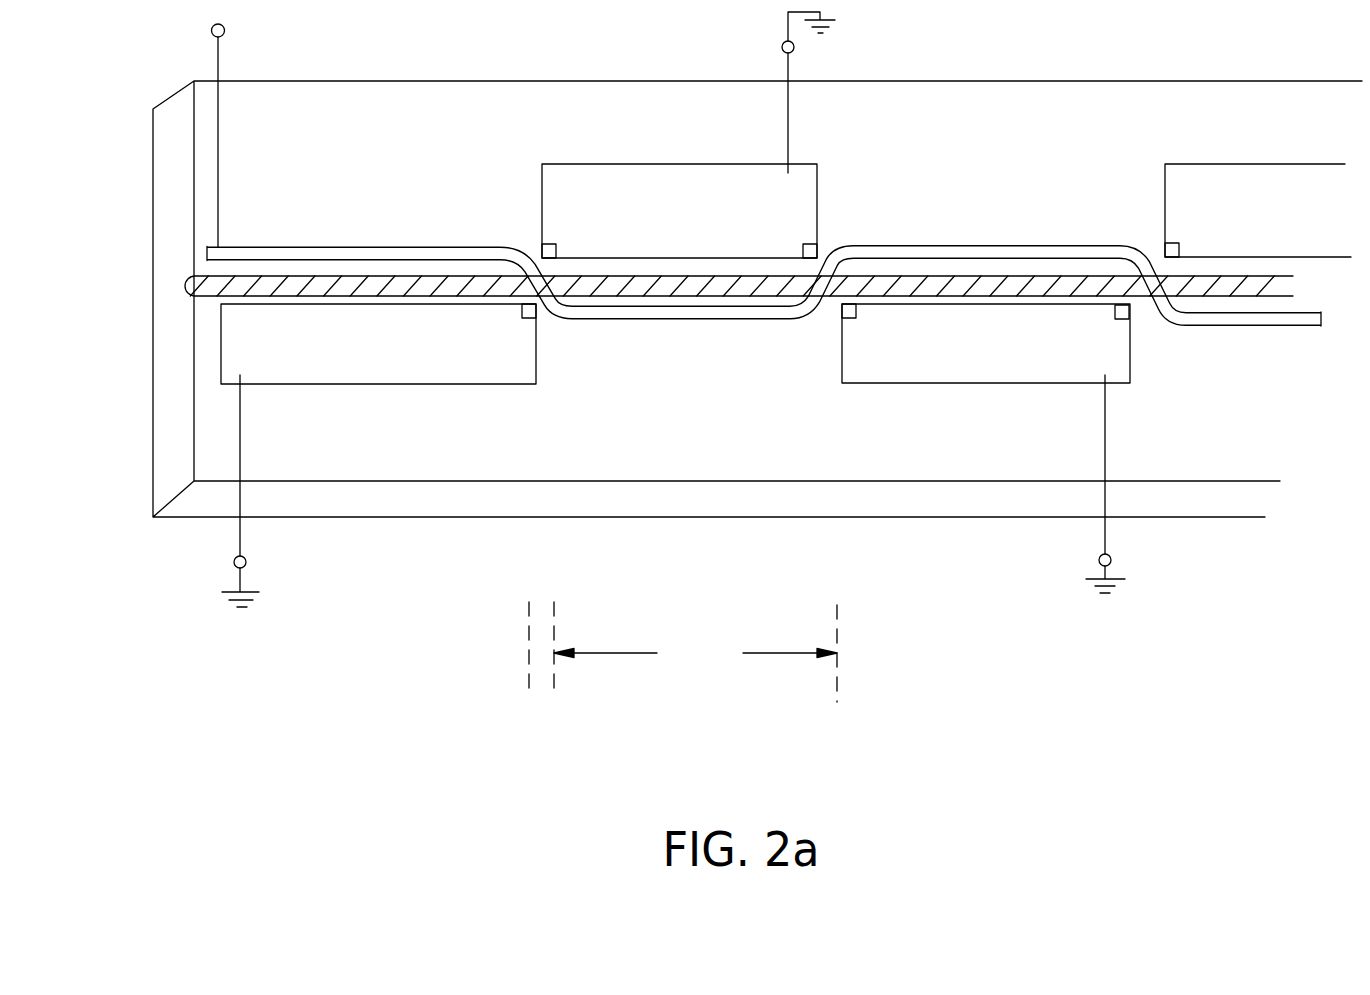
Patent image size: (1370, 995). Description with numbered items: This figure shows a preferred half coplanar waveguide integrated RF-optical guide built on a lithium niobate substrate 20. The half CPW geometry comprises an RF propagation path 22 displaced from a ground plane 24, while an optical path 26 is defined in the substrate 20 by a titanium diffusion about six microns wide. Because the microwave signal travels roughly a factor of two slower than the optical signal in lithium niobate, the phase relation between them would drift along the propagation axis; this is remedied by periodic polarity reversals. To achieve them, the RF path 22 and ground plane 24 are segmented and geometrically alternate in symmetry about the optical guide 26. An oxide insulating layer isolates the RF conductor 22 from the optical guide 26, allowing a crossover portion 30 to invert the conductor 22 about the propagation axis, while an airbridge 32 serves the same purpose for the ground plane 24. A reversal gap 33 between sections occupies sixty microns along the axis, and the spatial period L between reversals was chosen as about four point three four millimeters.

The lithium niobate substrate 20 is at (440, 503).
The RF propagation path 22 is at (367, 246).
The ground plane 24 is at (678, 224).
The optical path 26 is at (203, 298).
The crossover portion 30 is at (553, 295).
The airbridge 32 is at (812, 249).
The reversal gap 33 is at (542, 598).